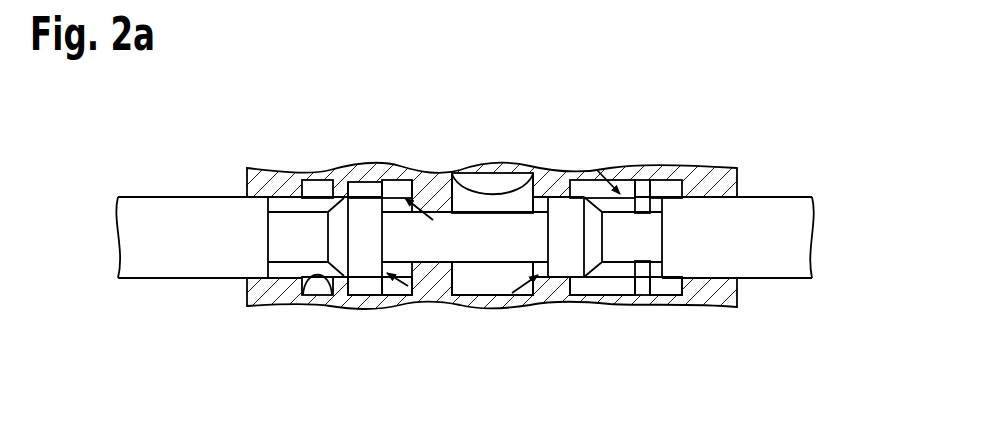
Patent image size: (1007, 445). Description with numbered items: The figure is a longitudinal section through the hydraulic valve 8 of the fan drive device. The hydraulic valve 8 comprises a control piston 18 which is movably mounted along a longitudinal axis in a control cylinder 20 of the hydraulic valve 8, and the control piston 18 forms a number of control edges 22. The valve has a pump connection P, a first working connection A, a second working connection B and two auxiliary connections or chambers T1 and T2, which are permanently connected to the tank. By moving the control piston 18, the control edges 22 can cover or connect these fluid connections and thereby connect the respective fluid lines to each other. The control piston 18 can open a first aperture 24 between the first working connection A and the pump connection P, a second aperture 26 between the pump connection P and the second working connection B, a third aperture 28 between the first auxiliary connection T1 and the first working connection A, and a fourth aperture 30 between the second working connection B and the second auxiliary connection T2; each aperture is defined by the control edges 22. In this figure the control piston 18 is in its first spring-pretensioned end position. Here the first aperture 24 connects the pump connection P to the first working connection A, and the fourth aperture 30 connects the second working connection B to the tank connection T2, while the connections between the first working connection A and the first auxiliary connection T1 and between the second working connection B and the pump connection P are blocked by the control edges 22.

The hydraulic valve 8 is at (147, 338).
The control piston 18 is at (187, 227).
The control cylinder 20 is at (258, 177).
The control edges 22 is at (423, 290).
The first aperture 24 is at (432, 171).
The second aperture 26 is at (548, 171).
The third aperture 28 is at (343, 177).
The fourth aperture 30 is at (642, 186).
The first auxiliary connection T1 is at (319, 285).
The second auxiliary connection T2 is at (668, 285).
The first working connection A is at (387, 283).
The second working connection B is at (600, 283).
The pump connection P is at (473, 283).